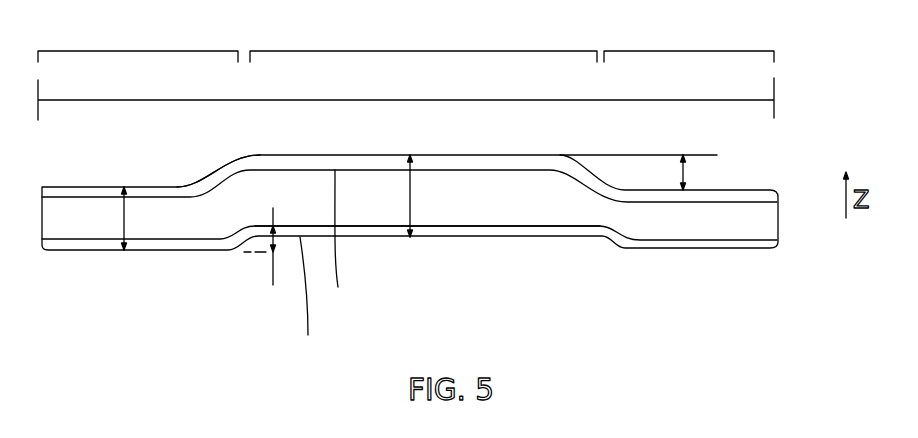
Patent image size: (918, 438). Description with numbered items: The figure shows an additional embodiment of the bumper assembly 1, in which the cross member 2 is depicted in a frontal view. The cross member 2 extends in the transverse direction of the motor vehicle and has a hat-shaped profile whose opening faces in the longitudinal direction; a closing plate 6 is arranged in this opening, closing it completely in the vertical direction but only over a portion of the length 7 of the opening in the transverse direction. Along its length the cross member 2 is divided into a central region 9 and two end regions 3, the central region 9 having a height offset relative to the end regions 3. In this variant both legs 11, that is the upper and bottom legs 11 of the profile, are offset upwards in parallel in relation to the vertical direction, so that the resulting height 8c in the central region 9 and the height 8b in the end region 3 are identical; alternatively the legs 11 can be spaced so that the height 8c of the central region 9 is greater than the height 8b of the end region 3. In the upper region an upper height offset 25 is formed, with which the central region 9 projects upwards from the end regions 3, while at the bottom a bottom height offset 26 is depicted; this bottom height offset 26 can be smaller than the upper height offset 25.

The bumper assembly 1 is at (826, 106).
The cross member 2 is at (183, 180).
The end region 3 is at (128, 50).
The closing plate 6 is at (365, 217).
The length 7 is at (406, 96).
The height in the end region 8b is at (142, 218).
The height in the central region 8c is at (426, 196).
The central region 9 is at (425, 50).
The leg 11 is at (333, 268).
The upper height offset 25 is at (687, 177).
The bottom height offset 26 is at (259, 248).